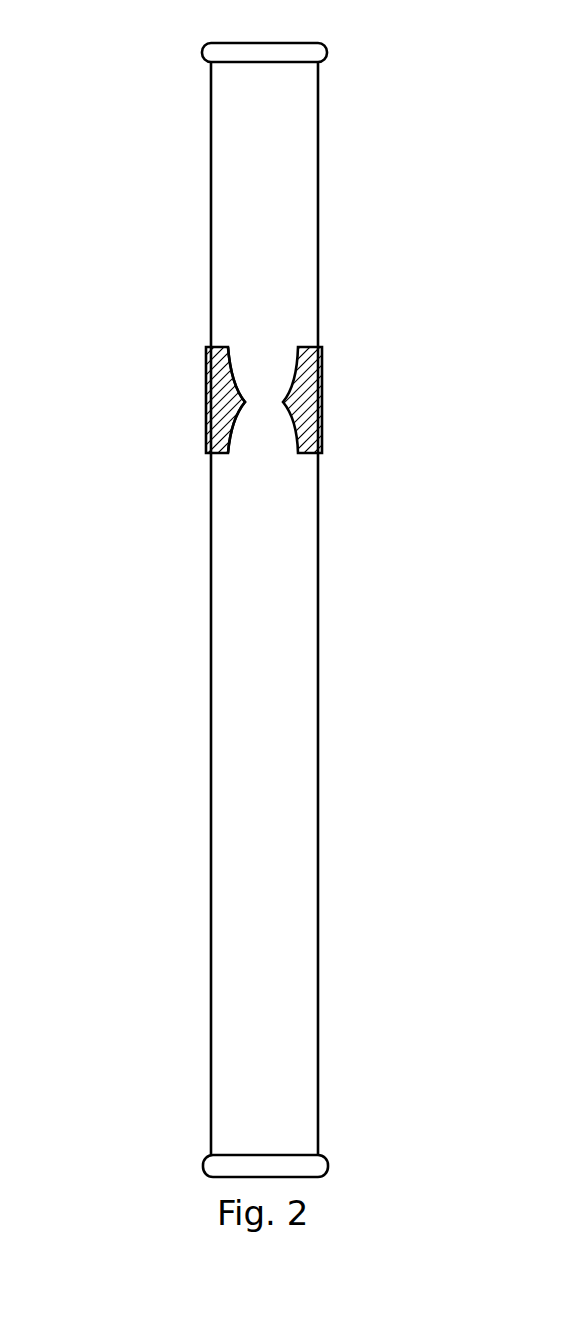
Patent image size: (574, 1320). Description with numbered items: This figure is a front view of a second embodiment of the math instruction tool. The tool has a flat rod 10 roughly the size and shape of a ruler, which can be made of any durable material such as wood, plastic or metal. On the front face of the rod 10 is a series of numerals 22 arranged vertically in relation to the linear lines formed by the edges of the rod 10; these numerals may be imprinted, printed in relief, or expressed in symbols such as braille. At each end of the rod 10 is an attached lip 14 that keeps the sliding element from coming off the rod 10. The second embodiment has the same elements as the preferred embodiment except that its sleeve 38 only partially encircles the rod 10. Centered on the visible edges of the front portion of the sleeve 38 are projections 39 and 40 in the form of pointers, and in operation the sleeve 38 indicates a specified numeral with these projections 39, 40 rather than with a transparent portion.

The flat rod 10 is at (208, 884).
The lip 14 is at (195, 54).
The series of numerals 22 is at (285, 762).
The sleeve 38 is at (206, 440).
The projection 39 is at (242, 406).
The projection 40 is at (286, 404).